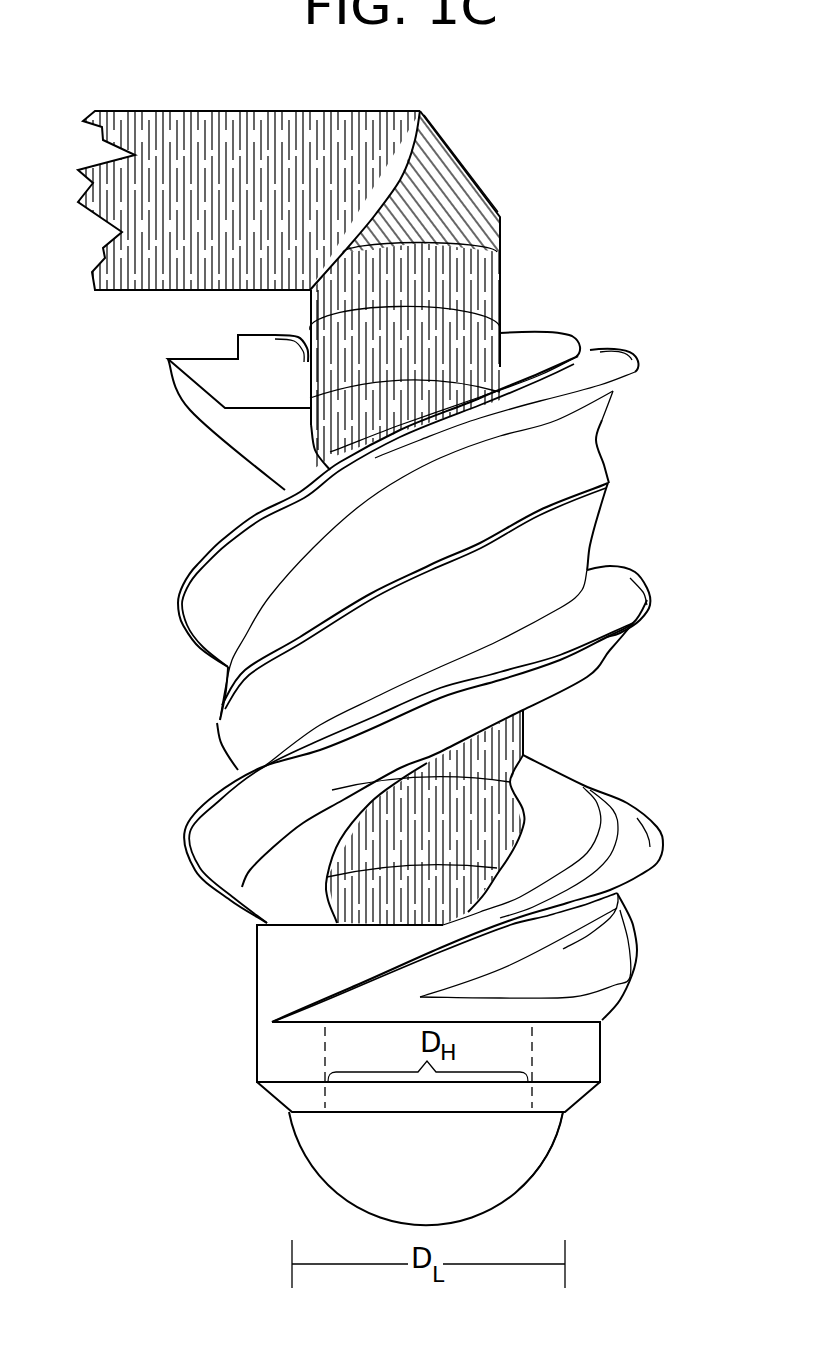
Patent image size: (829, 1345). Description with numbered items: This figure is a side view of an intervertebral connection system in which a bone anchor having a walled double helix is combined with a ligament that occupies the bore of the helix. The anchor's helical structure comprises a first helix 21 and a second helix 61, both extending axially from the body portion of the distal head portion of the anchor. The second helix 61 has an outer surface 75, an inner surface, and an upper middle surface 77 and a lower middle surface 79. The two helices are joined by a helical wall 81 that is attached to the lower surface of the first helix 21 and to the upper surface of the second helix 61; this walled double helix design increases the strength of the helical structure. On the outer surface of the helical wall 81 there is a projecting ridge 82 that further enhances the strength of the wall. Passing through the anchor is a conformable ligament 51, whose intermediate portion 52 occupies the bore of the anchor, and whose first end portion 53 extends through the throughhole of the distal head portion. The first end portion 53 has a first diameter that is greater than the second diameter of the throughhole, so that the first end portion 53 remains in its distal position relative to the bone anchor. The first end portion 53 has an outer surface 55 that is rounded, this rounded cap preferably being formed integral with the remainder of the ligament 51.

The conformable ligament 51 is at (170, 290).
The intermediate portion 52 is at (437, 300).
The first helix 21 is at (650, 600).
The second helix 61 is at (613, 357).
The upper middle surface 77 is at (582, 360).
The outer surface 75 is at (640, 360).
The lower middle surface 79 is at (613, 396).
The helical wall 81 is at (580, 440).
The projecting ridge 82 is at (617, 478).
The first end portion 53 is at (513, 1163).
The outer surface 55 is at (562, 1138).